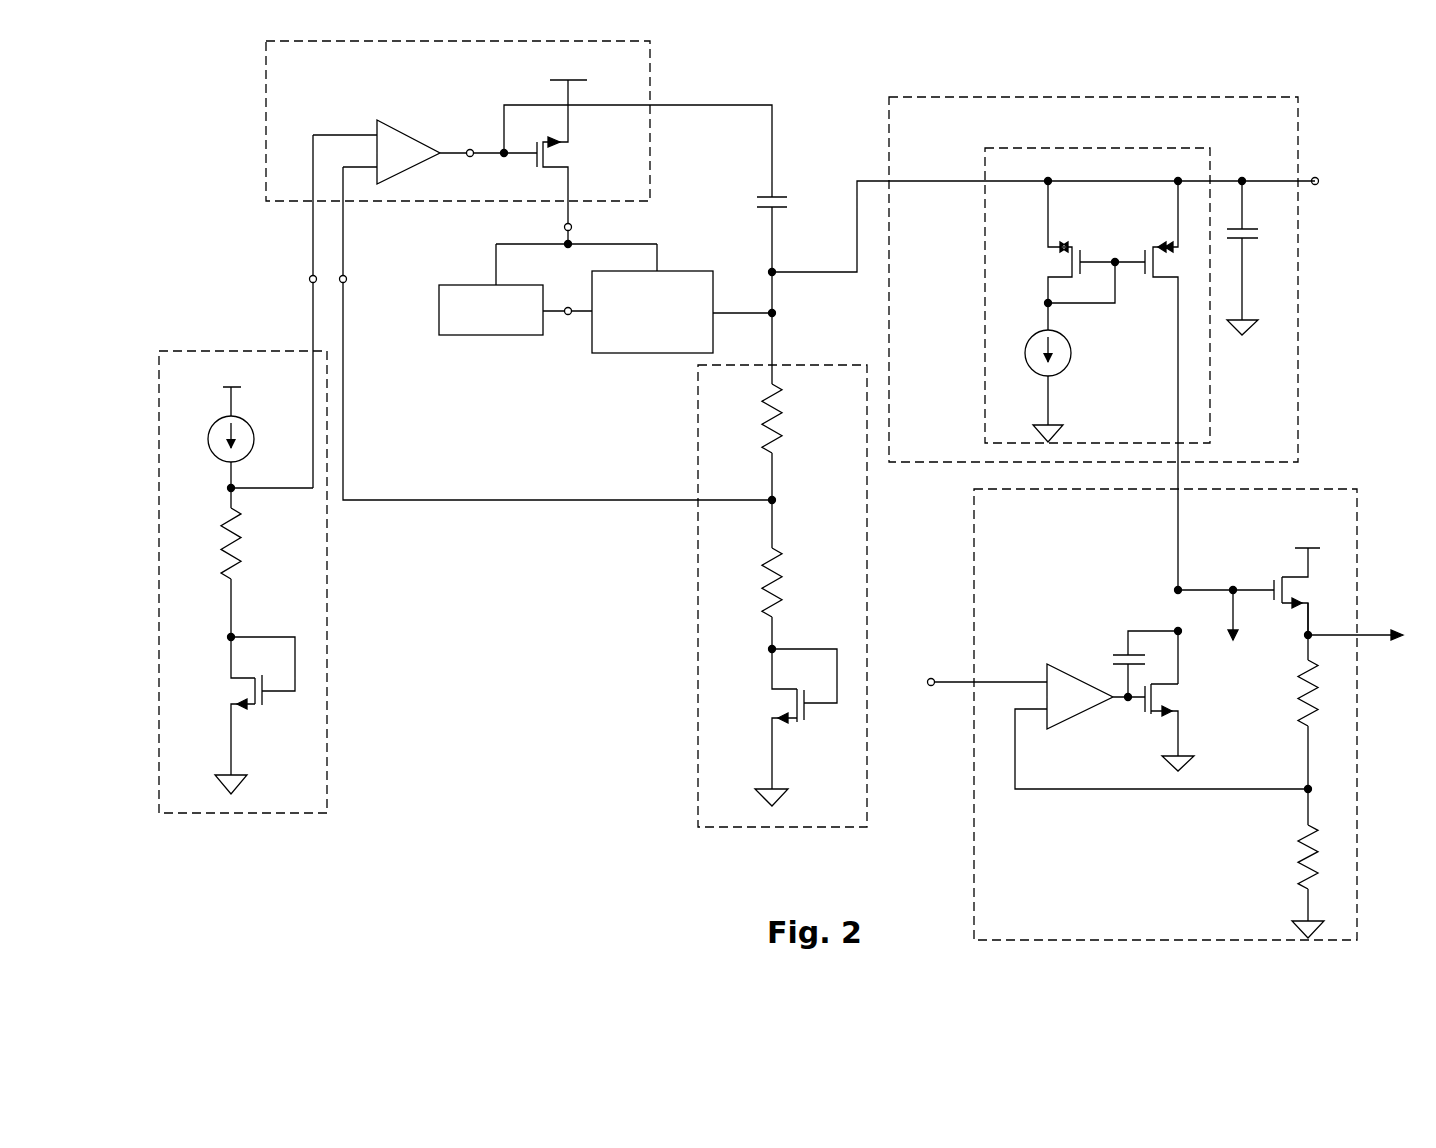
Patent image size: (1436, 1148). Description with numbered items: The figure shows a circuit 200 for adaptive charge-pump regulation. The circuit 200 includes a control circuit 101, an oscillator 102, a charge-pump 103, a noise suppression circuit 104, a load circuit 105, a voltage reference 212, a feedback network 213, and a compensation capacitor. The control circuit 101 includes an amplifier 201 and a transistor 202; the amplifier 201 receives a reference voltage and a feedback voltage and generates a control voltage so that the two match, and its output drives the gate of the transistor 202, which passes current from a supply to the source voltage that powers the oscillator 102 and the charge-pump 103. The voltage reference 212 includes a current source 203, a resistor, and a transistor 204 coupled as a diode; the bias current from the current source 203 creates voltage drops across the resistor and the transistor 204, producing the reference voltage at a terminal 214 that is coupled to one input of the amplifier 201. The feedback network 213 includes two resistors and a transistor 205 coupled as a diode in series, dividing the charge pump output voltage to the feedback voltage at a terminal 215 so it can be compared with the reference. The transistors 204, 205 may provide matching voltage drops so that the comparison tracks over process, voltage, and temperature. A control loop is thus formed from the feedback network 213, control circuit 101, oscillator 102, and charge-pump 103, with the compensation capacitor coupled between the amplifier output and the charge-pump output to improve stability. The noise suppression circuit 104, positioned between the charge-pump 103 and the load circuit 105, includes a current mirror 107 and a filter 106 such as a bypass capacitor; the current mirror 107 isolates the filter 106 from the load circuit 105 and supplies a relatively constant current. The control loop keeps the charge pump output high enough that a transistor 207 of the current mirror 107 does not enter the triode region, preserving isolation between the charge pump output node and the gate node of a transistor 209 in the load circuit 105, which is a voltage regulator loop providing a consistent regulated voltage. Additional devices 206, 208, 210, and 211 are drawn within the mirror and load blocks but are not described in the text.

The circuit 200 is at (1240, 83).
The control circuit 101 is at (266, 135).
The oscillator 102 is at (491, 335).
The charge-pump 103 is at (655, 353).
The noise suppression circuit 104 is at (882, 132).
The load circuit 105 is at (974, 845).
The filter 106 is at (1255, 243).
The current mirror 107 is at (979, 160).
The amplifier 201 is at (377, 121).
The transistor 202 is at (564, 156).
The current source 203 is at (282, 415).
The transistor 204 is at (262, 708).
The transistor 205 is at (804, 724).
The mirror transistor 206 is at (1100, 213).
The transistor 207 is at (1163, 284).
The reference current source 208 is at (1032, 322).
The transistor 209 is at (1278, 572).
The amplifier 210 is at (1046, 664).
The transistor 211 is at (1147, 718).
The voltage reference 212 is at (327, 622).
The feedback network 213 is at (698, 619).
The terminal 214 is at (308, 284).
The terminal 215 is at (348, 284).